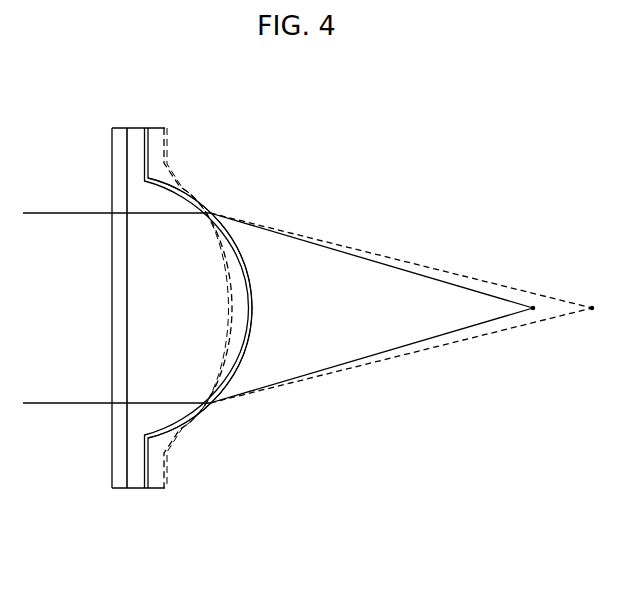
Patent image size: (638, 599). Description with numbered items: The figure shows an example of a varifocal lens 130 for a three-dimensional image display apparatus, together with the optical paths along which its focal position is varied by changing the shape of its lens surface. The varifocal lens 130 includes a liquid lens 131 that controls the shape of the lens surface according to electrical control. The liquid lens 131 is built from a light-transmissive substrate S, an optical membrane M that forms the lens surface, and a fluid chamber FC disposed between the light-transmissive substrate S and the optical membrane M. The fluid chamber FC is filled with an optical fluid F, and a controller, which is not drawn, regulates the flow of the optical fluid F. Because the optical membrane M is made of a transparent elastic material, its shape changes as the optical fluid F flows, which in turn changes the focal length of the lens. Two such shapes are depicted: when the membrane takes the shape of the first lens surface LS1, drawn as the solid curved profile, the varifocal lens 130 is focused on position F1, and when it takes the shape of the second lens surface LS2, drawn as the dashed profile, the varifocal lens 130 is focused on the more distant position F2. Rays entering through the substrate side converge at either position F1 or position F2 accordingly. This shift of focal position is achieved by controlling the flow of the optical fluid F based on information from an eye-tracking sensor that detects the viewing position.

The varifocal lens 130 is at (243, 148).
The liquid lens 131 is at (134, 496).
The optical membrane M is at (143, 128).
The first lens surface LS1 is at (228, 232).
The second lens surface LS2 is at (226, 265).
The light-transmissive substrate S is at (118, 240).
The fluid chamber FC is at (140, 280).
The optical fluid F is at (161, 318).
The position F1 is at (533, 312).
The position F2 is at (592, 312).